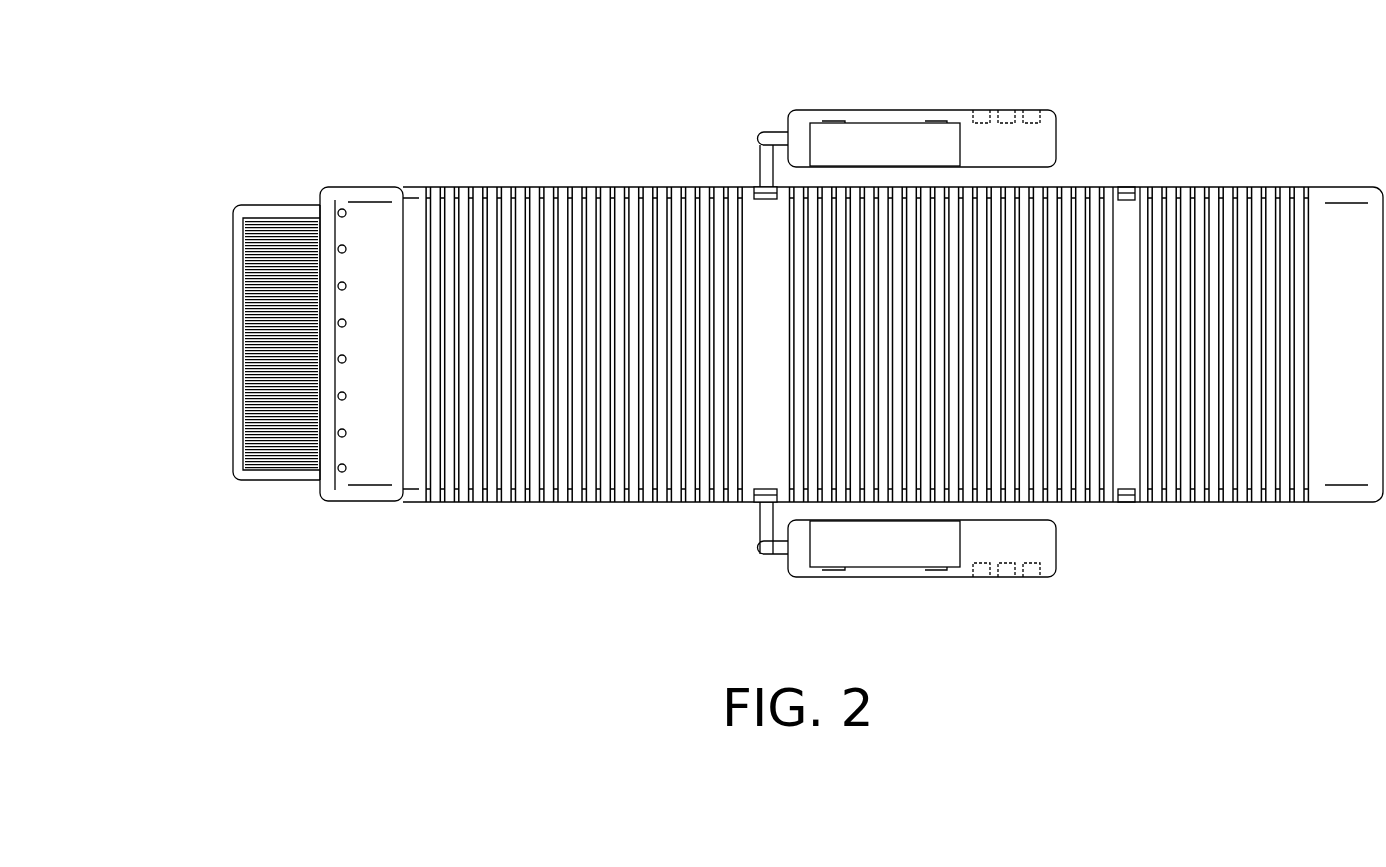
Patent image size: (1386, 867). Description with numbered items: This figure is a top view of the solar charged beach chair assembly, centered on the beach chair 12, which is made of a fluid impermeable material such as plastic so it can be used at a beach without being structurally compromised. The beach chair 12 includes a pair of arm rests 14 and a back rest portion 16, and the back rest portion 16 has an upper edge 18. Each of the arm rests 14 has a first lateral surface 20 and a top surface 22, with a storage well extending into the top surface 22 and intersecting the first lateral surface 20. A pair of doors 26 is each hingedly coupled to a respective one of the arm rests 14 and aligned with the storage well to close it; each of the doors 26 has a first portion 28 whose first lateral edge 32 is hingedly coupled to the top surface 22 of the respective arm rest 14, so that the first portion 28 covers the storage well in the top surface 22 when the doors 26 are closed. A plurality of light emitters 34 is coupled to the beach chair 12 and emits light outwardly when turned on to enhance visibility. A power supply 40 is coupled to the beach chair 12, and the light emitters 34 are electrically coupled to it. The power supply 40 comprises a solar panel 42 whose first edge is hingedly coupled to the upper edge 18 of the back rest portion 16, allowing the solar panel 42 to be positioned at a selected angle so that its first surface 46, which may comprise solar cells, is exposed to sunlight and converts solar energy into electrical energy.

The beach chair 12 is at (686, 186).
The arm rests 14 is at (1057, 110).
The back rest portion 16 is at (400, 186).
The upper edge 18 is at (319, 233).
The first lateral surface 20 is at (1032, 165).
The top surface 22 is at (995, 152).
The doors 26 is at (885, 123).
The first portion 28 is at (832, 544).
The first lateral edge 32 is at (867, 565).
The light emitters 34 is at (346, 433).
The power supply 40 is at (280, 488).
The solar panel 42 is at (233, 472).
The first surface 46 is at (272, 357).